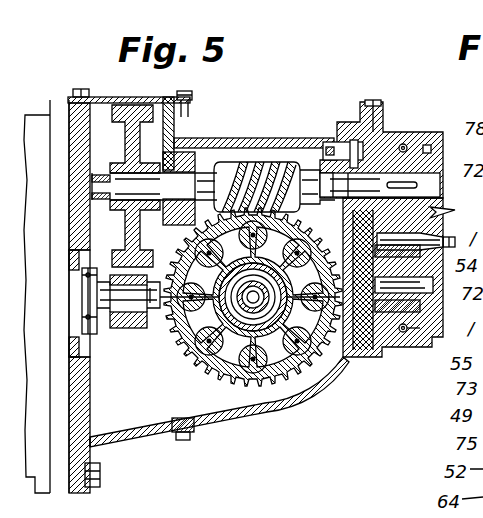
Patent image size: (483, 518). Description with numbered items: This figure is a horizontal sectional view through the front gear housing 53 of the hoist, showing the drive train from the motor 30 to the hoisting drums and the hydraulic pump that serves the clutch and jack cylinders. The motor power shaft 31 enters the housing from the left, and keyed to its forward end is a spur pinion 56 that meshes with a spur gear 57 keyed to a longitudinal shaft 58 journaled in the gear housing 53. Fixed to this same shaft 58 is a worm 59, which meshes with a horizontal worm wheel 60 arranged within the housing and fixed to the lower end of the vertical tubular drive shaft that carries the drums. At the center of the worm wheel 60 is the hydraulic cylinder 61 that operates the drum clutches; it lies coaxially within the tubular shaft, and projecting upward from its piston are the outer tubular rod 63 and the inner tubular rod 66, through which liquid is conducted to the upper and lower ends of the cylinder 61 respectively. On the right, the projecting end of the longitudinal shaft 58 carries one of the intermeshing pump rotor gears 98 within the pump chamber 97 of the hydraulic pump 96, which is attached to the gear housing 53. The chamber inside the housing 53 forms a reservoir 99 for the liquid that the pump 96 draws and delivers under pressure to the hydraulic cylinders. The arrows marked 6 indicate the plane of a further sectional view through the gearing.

The motor 30 is at (37, 127).
The spur gear 57 is at (142, 104).
The longitudinal shaft 58 is at (205, 178).
The worm 59 is at (268, 164).
The hydraulic pump 96 is at (380, 140).
The pump chamber 97 is at (408, 150).
The pump rotor gears 98 is at (444, 212).
The horizontal worm wheel 60 is at (253, 383).
The tubular rod 66 is at (272, 328).
The tubular rod 63 is at (258, 320).
The hydraulic cylinder 61 is at (246, 310).
The front gear housing 53 is at (293, 400).
The reservoir 99 is at (136, 424).
The motor power shaft 31 is at (96, 322).
The spur pinion 56 is at (140, 328).
The direction arrow 6 is at (164, 282).